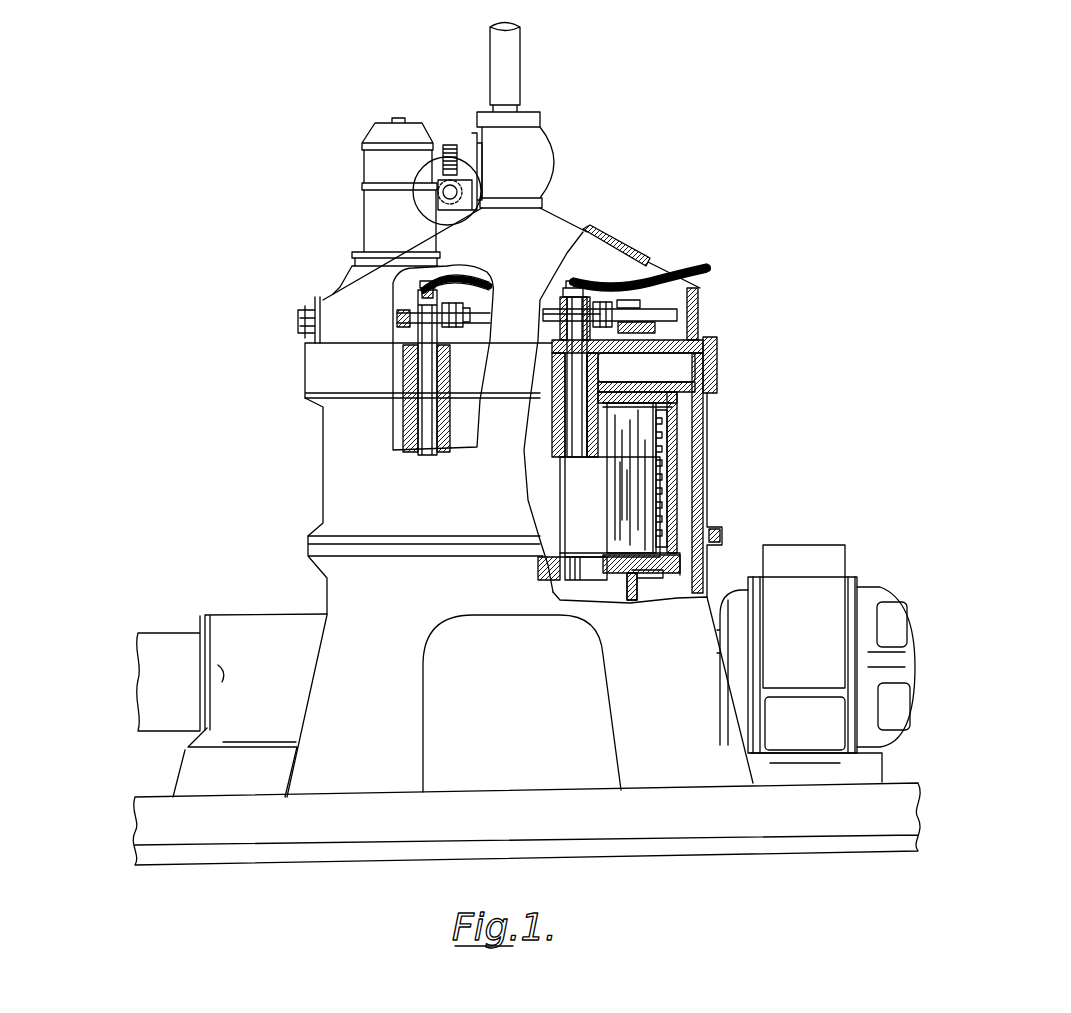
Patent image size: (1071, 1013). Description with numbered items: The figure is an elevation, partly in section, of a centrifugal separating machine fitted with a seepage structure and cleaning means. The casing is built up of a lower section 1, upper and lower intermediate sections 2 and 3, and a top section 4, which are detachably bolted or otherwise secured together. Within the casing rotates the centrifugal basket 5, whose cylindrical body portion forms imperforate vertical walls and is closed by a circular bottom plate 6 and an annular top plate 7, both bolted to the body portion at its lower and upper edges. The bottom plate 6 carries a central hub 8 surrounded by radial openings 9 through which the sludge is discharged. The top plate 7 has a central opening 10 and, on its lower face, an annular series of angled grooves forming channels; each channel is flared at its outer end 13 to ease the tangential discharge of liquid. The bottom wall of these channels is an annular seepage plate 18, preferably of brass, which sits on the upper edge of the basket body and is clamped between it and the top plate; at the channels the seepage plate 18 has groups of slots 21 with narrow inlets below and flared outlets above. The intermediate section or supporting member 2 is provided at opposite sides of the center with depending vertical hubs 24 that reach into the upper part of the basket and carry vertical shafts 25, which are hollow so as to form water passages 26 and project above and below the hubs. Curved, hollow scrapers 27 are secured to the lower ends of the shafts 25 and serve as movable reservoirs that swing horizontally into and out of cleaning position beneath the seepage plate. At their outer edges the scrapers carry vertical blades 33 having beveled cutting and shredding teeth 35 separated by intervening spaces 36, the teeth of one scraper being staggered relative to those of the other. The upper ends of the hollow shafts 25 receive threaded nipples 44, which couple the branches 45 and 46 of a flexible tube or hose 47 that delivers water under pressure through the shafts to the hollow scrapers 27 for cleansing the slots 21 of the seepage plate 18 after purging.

The lower section 1 is at (520, 514).
The upper intermediate section 2 is at (428, 370).
The lower intermediate section 3 is at (353, 467).
The top section 4 is at (511, 254).
The centrifugal basket 5 is at (665, 500).
The bottom plate 6 is at (622, 583).
The top plate 7 is at (630, 392).
The central hub 8 is at (548, 550).
The radial openings 9 is at (580, 582).
The central opening 10 is at (600, 393).
The outer end of channel 13 is at (708, 398).
The seepage plate 18 is at (660, 393).
The slots 21 is at (638, 445).
The vertical hubs 24 is at (562, 420).
The vertical shafts 25 is at (572, 438).
The water passages 26 is at (543, 315).
The curved scrapers 27 is at (610, 507).
The vertical blades 33 is at (662, 456).
The cutting and shredding teeth 35 is at (662, 478).
The intervening spaces 36 is at (650, 490).
The nipples 44 is at (422, 283).
The branch 45 is at (482, 285).
The branch 46 is at (573, 286).
The flexible tube or hose 47 is at (695, 272).